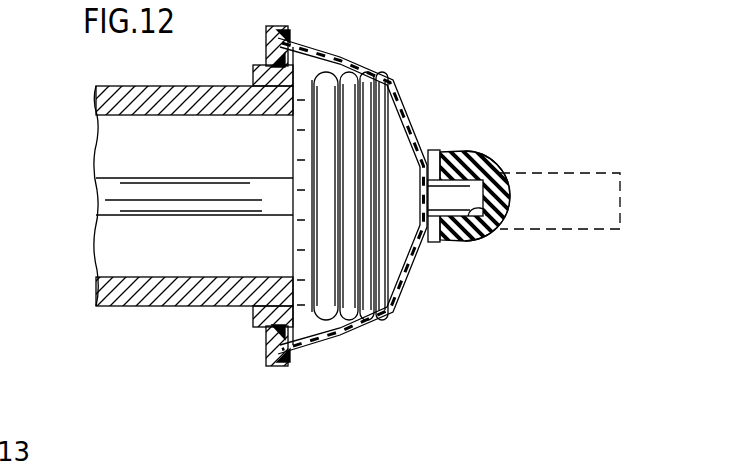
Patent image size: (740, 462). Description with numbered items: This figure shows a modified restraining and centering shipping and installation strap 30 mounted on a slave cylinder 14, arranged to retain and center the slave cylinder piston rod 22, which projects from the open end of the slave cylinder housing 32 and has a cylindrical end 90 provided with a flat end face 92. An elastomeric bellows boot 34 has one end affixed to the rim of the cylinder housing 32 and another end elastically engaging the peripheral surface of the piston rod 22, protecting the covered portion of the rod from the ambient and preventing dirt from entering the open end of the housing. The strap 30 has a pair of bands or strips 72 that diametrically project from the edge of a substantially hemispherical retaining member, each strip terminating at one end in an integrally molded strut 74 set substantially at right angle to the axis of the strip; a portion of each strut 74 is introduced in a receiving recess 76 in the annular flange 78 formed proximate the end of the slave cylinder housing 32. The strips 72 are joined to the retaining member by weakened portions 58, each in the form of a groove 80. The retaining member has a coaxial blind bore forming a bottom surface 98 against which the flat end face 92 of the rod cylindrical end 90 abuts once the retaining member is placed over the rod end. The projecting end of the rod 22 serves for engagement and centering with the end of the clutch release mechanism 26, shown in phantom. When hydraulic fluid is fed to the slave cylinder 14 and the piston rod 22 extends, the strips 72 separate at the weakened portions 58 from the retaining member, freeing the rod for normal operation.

The slave cylinder 14 is at (126, 86).
The piston rod 22 is at (208, 216).
The clutch release mechanism 26 is at (548, 232).
The shipping and installation strap 30 is at (395, 201).
The slave cylinder housing 32 is at (173, 294).
The elastomeric bellows boot 34 is at (345, 72).
The weakened portion 58 is at (440, 143).
The band or strip 72 is at (402, 92).
The strut 74 is at (280, 28).
The receiving recess 76 is at (268, 52).
The annular flange 78 is at (233, 95).
The groove 80 is at (455, 158).
The cylindrical end 90 is at (480, 183).
The flat end face 92 is at (503, 195).
The bottom surface 98 is at (477, 241).